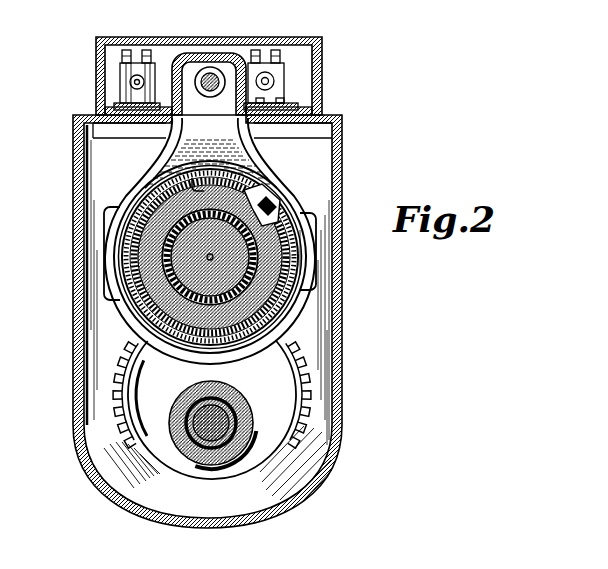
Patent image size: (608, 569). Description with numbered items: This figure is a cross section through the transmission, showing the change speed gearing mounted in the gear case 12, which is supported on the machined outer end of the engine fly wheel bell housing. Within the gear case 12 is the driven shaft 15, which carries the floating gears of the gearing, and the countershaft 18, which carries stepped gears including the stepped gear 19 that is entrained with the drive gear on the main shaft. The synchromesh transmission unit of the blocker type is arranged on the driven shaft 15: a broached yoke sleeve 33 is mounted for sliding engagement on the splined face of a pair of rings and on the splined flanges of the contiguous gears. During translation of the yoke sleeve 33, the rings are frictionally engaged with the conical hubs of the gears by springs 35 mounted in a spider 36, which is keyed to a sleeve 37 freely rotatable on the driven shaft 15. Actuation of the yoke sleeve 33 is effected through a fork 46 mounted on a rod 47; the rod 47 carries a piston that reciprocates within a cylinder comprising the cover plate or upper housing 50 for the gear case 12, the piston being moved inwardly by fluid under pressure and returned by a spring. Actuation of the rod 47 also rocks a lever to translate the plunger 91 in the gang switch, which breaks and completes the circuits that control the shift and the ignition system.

The gear case 12 is at (344, 353).
The driven shaft 15 is at (148, 230).
The countershaft 18 is at (242, 398).
The stepped gear 19 is at (212, 410).
The yoke sleeve 33 is at (138, 314).
The springs 35 is at (262, 200).
The spider 36 is at (281, 226).
The sleeve 37 is at (292, 292).
The fork 46 is at (210, 208).
The rod 47 is at (225, 84).
The cover plate or upper housing 50 is at (323, 91).
The plunger 91 is at (130, 80).